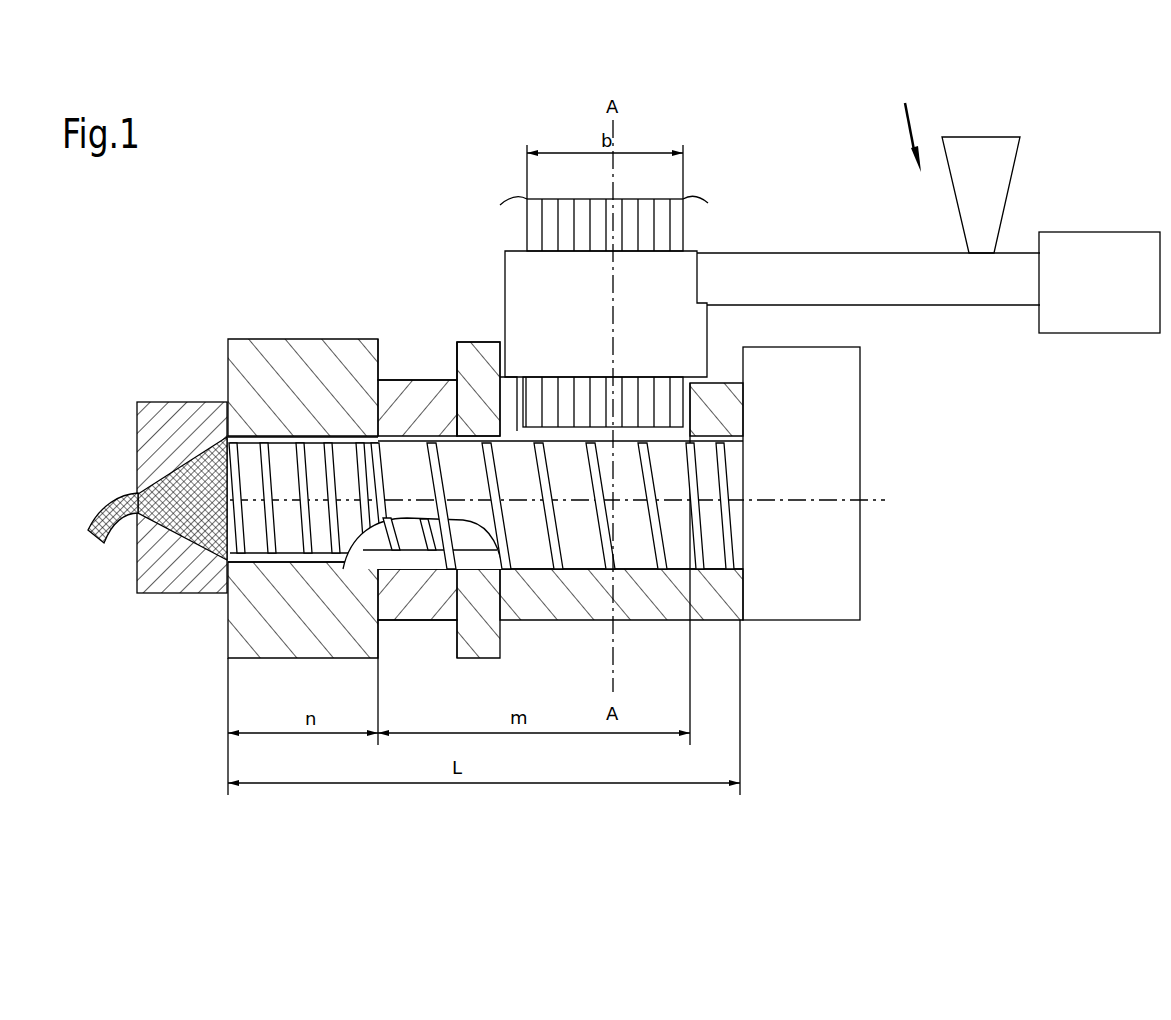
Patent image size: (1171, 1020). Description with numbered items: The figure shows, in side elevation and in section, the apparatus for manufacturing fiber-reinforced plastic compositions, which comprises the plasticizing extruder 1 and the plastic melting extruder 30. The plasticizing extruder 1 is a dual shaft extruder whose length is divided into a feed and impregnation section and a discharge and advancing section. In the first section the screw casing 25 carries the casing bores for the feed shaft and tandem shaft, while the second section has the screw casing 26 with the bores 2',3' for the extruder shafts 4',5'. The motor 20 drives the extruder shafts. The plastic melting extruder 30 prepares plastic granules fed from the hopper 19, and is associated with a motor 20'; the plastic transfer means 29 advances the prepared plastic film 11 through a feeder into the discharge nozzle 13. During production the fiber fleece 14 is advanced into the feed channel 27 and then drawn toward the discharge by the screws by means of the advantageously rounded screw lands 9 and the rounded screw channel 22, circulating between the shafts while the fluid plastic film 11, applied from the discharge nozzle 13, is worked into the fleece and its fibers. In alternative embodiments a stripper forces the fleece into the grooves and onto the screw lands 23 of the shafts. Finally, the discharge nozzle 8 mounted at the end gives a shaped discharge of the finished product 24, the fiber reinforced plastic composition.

The plasticizing extruder 1 is at (372, 140).
The bores 2',3' is at (479, 277).
The screw lands 23 is at (385, 405).
The screw casing 26 is at (387, 375).
The screw lands 9 is at (446, 493).
The discharge nozzle 13 is at (545, 287).
The fiber fleece 14 is at (667, 230).
The plastic film 11 is at (645, 407).
The plastic transfer means 29 is at (807, 282).
The plastic melting extruder 30 is at (902, 118).
The hopper 19 is at (985, 188).
The motor 20' is at (1086, 370).
The motor 20 is at (801, 610).
The screw casing 25 is at (573, 597).
The screw channel 22 is at (518, 563).
The feed channel 27 is at (542, 543).
The extruder shafts 4',5' is at (265, 658).
The discharge nozzle 8 is at (178, 567).
The finished product 24 is at (93, 548).